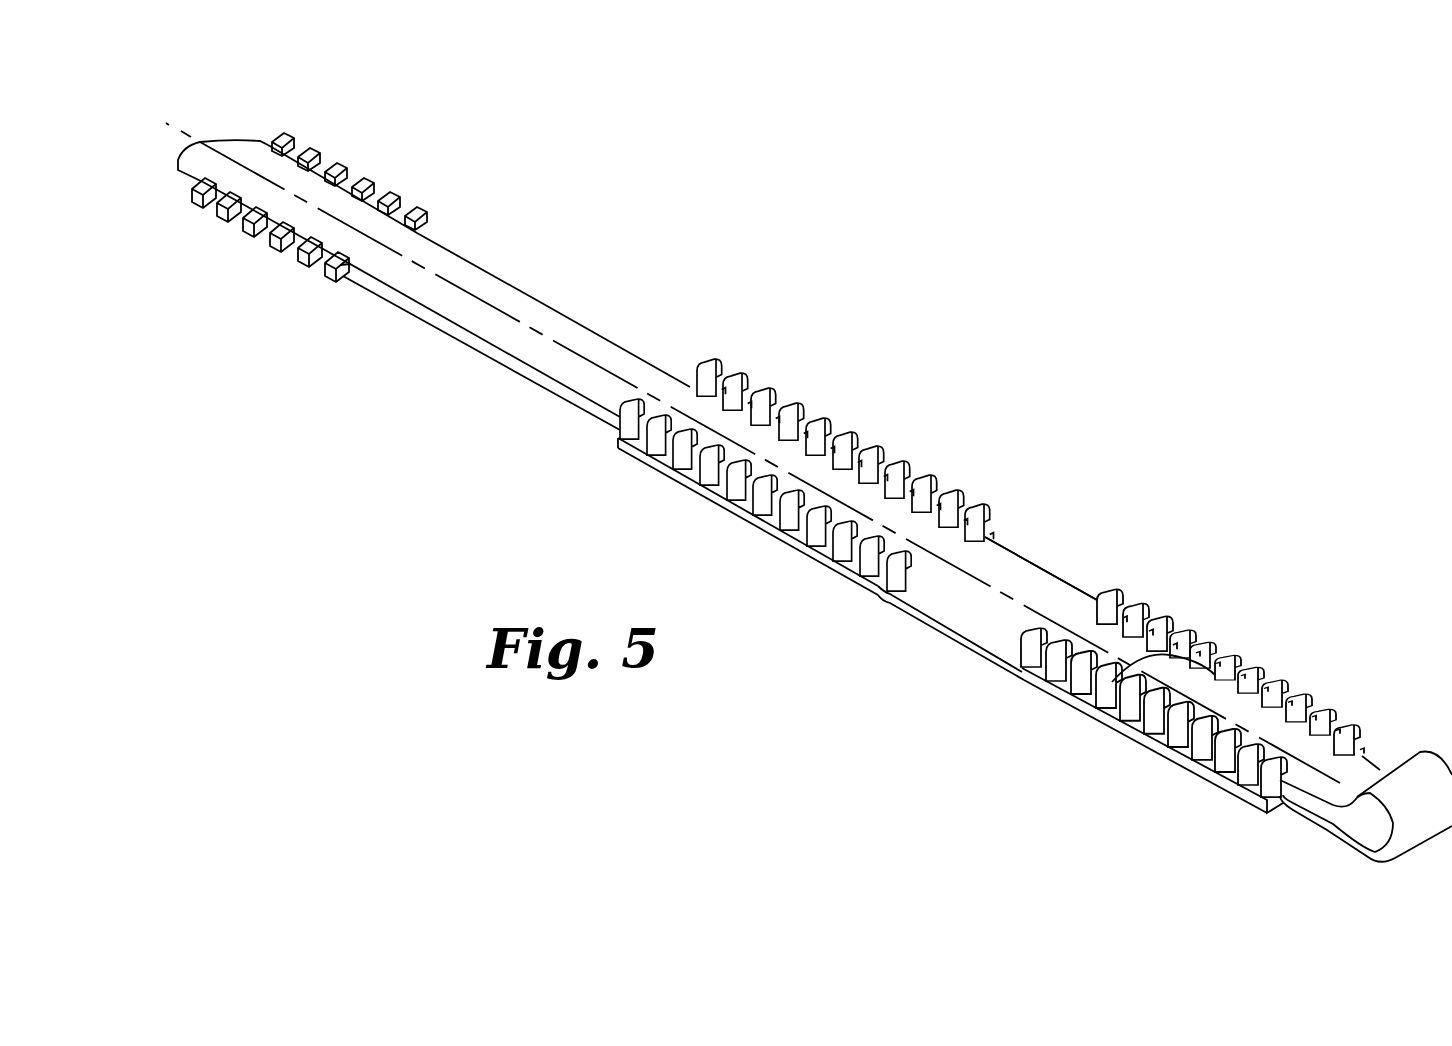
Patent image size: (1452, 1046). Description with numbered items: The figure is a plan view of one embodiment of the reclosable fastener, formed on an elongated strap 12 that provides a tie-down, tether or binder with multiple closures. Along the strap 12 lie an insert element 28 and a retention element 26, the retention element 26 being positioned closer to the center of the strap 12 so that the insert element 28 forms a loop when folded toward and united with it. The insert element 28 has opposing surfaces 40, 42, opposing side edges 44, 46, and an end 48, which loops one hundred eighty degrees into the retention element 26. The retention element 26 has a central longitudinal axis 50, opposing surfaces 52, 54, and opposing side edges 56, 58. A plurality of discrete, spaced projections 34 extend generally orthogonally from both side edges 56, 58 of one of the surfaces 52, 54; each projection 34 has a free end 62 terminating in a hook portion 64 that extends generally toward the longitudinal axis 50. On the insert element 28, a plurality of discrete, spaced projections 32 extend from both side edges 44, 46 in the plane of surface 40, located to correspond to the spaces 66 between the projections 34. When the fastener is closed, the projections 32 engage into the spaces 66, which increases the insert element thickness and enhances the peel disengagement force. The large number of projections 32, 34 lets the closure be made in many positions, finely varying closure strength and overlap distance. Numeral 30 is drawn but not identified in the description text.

The strap 12 is at (550, 327).
The retention element 26 is at (829, 447).
The insert element 28 is at (319, 208).
The near-side tooth 30 is at (323, 263).
The projections 32 is at (277, 247).
The projections 34 is at (687, 480).
The opposing surface 40 is at (317, 193).
The opposing surface 42 is at (1293, 737).
The side edge 44 is at (257, 140).
The side edge 46 is at (190, 180).
The end 48 is at (217, 138).
The central longitudinal axis 50 is at (452, 282).
The opposing surface 52 is at (1070, 603).
The opposing surface 54 is at (793, 540).
The side edge 56 is at (1040, 560).
The side edge 58 is at (917, 613).
The free end 62 is at (723, 373).
The hook portion 64 is at (696, 386).
The spaces 66 is at (807, 420).